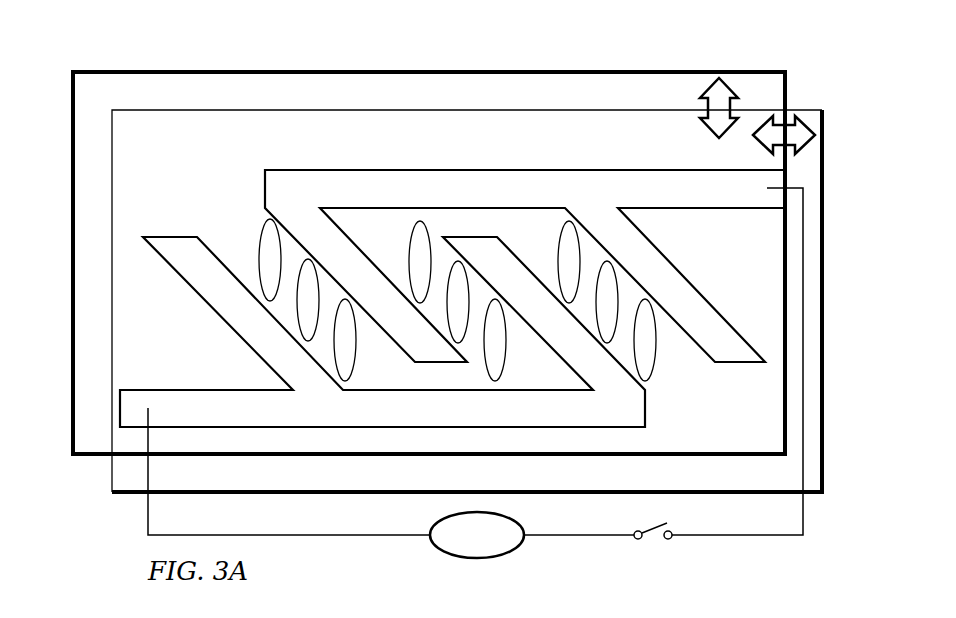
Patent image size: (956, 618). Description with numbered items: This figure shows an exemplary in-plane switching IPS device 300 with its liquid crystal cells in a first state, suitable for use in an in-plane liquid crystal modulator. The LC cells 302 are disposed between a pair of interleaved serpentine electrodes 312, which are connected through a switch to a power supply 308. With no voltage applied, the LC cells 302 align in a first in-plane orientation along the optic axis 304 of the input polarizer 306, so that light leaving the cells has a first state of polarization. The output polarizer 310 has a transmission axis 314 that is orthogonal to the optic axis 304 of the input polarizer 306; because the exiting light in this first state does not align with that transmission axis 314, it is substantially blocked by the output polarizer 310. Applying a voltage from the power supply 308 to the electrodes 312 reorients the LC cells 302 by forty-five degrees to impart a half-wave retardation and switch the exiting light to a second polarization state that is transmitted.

The IPS device 300 is at (585, 59).
The LC cells 302 is at (262, 245).
The optic axis 304 is at (718, 92).
The input polarizer 306 is at (140, 82).
The power supply 308 is at (438, 550).
The output polarizer 310 is at (208, 118).
The electrodes 312 is at (137, 397).
The transmission axis 314 is at (812, 125).